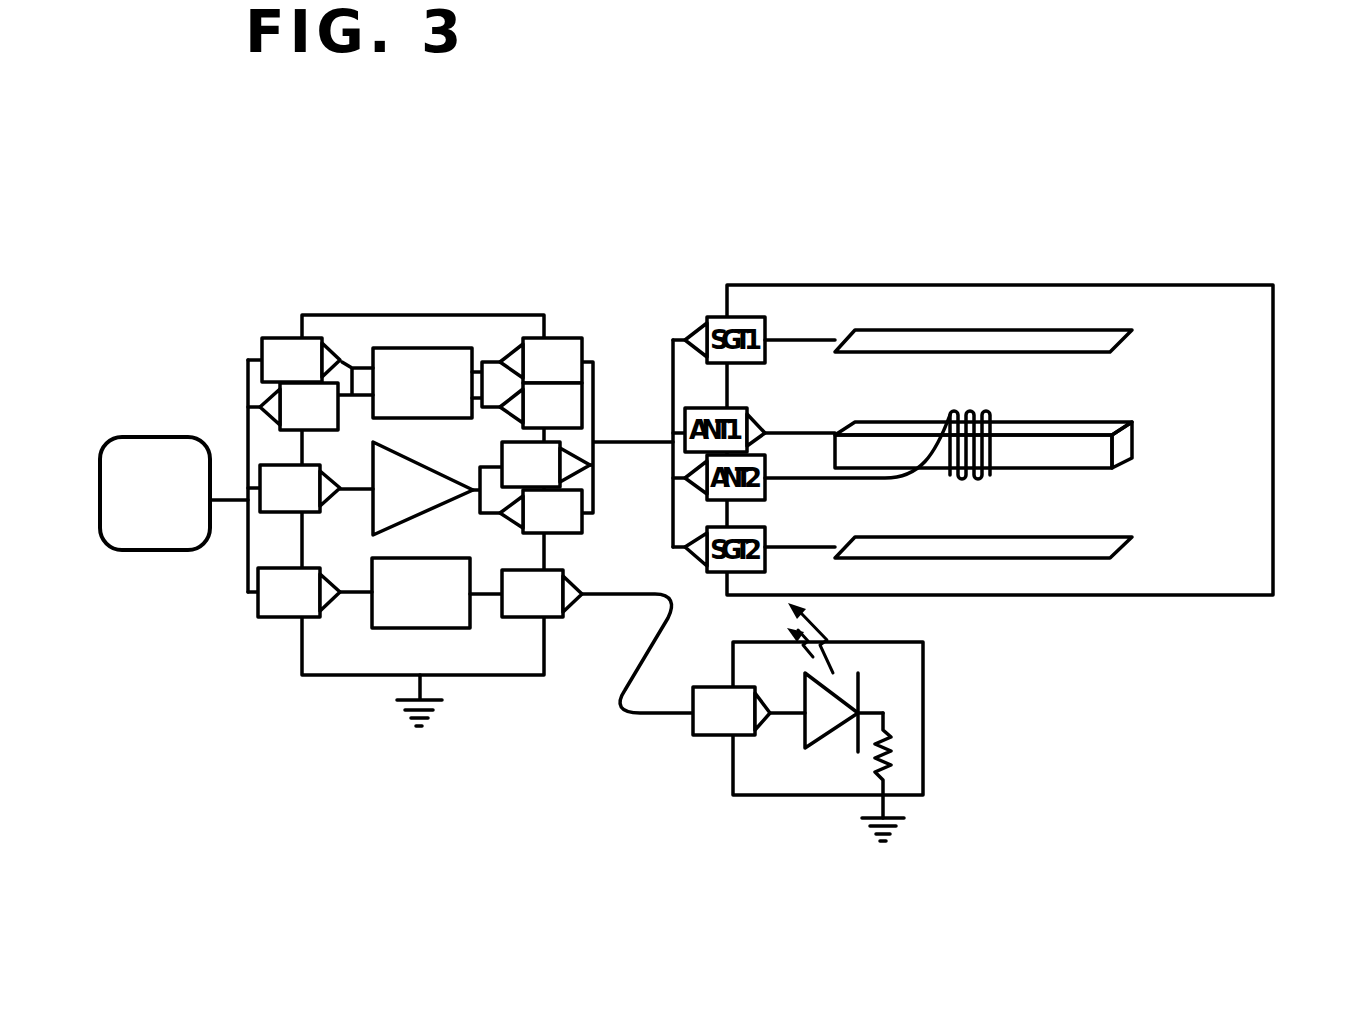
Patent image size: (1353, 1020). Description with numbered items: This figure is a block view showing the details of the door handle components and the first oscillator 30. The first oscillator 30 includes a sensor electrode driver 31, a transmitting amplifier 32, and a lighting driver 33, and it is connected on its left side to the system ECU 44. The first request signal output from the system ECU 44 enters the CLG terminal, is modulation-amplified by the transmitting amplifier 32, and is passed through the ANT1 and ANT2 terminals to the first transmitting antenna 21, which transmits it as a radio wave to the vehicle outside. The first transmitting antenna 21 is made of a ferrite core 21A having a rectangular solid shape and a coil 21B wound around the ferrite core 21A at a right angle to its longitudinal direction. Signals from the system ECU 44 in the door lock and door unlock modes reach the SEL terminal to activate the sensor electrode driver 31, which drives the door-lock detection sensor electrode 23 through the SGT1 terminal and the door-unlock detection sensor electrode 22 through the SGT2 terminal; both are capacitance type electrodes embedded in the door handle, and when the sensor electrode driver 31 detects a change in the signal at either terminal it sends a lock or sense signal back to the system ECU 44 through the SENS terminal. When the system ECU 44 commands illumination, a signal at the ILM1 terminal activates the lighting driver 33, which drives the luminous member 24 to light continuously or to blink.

The first transmitting antenna 21 is at (1012, 445).
The ferrite core 21A is at (1098, 456).
The coil 21B is at (990, 473).
The door-unlock detection sensor electrode 22 is at (1115, 540).
The door-lock detection sensor electrode 23 is at (1115, 334).
The luminous member 24 is at (898, 706).
The first oscillator 30 is at (459, 529).
The sensor electrode driver 31 is at (410, 353).
The transmitting amplifier 32 is at (402, 458).
The lighting driver 33 is at (437, 628).
The system ECU 44 is at (168, 552).